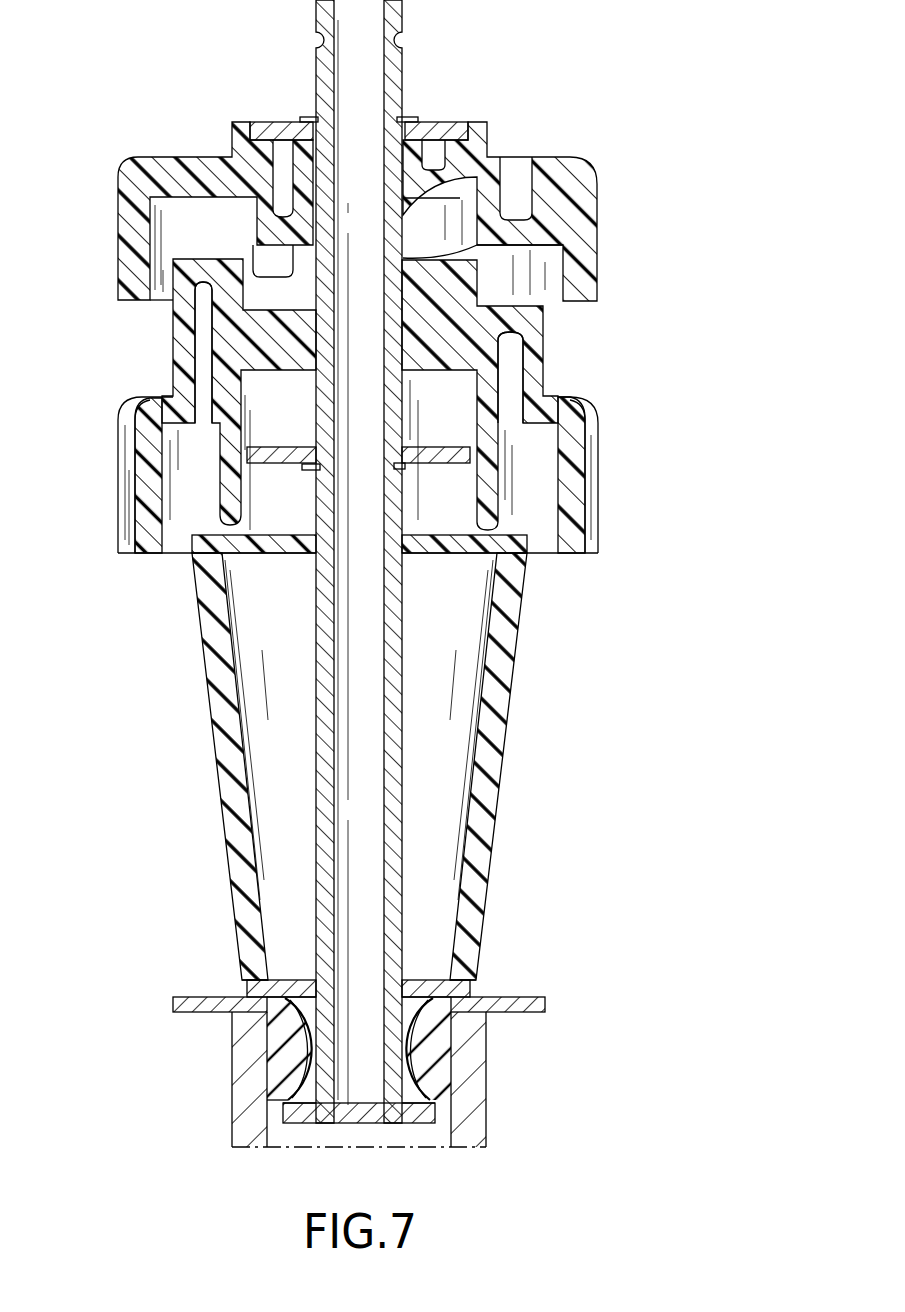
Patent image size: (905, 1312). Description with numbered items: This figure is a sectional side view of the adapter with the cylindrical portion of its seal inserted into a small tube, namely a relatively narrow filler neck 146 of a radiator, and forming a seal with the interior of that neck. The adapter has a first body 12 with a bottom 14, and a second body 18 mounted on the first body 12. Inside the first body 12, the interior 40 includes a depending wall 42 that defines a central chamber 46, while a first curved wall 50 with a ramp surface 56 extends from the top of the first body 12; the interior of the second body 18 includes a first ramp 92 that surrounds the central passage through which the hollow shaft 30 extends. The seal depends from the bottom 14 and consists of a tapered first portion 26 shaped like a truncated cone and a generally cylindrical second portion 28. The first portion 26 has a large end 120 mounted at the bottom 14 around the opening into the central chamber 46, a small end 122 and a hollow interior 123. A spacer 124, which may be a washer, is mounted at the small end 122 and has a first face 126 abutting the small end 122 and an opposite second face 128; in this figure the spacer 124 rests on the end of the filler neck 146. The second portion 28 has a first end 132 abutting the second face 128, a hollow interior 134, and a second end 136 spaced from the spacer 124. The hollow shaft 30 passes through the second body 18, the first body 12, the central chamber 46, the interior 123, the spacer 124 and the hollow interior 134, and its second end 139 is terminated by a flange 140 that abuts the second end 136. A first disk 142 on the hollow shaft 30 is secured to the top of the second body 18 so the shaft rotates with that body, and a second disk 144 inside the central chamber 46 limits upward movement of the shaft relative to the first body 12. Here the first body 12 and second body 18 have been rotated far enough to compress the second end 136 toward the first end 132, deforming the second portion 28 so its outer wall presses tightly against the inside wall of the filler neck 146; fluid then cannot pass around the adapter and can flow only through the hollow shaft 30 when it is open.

The first body 12 is at (598, 509).
The bottom 14 is at (583, 545).
The second body 18 is at (596, 218).
The first portion 26 is at (497, 778).
The second portion 28 is at (440, 1047).
The hollow shaft 30 is at (393, 93).
The interior 40 is at (200, 517).
The depending wall 42 is at (227, 458).
The central chamber 46 is at (447, 408).
The first curved wall 50 is at (173, 342).
The ramp surface 56 is at (203, 257).
The first ramp 92 is at (513, 250).
The large end 120 is at (207, 593).
The small end 122 is at (238, 948).
The hollow interior 123 is at (447, 685).
The spacer 124 is at (458, 992).
The first face 126 is at (472, 958).
The second face 128 is at (447, 1015).
The first end 132 is at (293, 1003).
The hollow interior 134 is at (298, 1052).
The second end 136 is at (286, 1089).
The second end 139 is at (393, 1072).
The flange 140 is at (415, 1124).
The first disk 142 is at (275, 129).
The second disk 144 is at (458, 457).
The filler neck 146 is at (480, 1117).